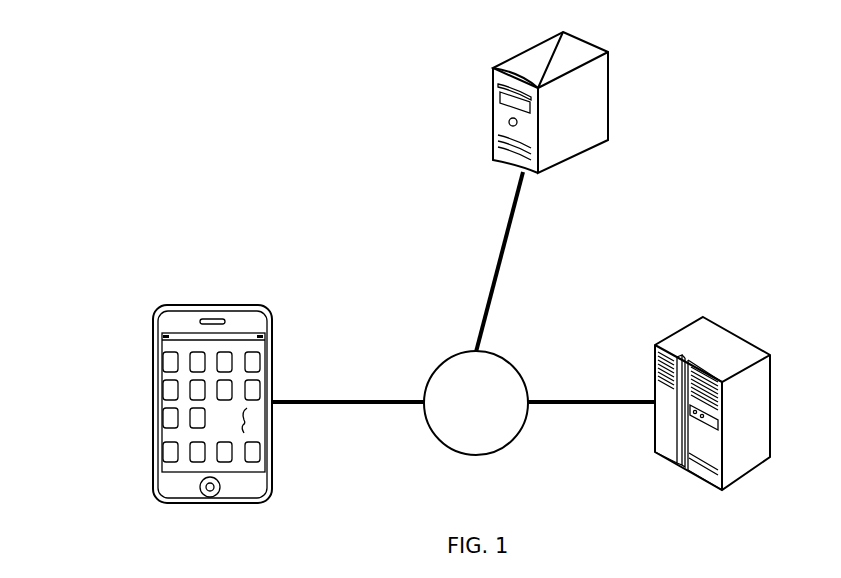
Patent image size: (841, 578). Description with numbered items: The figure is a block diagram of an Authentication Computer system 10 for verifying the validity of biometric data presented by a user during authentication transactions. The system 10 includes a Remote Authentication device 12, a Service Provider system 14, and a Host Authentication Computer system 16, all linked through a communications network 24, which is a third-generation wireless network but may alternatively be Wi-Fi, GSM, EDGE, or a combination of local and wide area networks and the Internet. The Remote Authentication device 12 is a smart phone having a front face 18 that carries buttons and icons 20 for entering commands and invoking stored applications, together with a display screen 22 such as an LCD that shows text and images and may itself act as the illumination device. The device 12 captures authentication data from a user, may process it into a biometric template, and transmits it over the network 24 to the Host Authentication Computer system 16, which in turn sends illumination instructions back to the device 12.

The Authentication Computer (AC) System 10 is at (141, 96).
The Remote Authentication (RA) Device 12 is at (212, 305).
The Service Provider (SP) System 14 is at (492, 90).
The Host Authentication Computer (HAC) System 16 is at (703, 317).
The front face 18 is at (180, 485).
The buttons and icons 20 is at (170, 362).
The display screen 22 is at (247, 422).
The communications network 24 is at (445, 360).